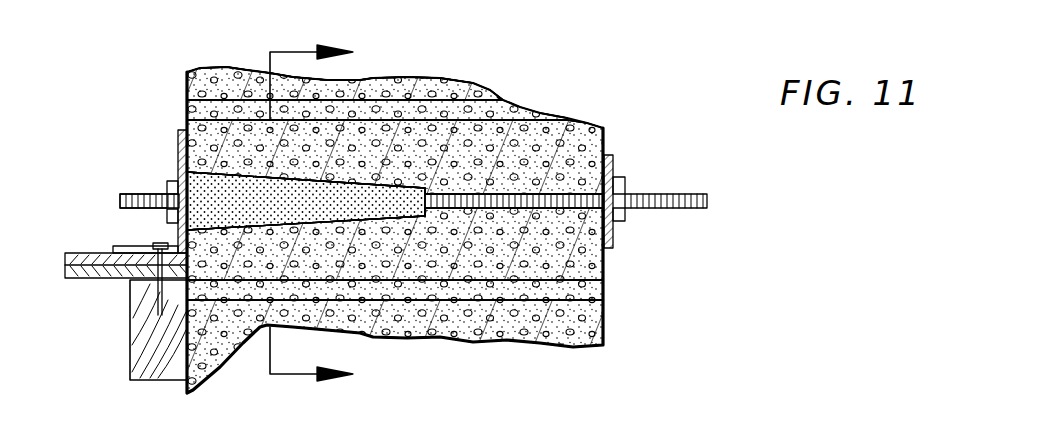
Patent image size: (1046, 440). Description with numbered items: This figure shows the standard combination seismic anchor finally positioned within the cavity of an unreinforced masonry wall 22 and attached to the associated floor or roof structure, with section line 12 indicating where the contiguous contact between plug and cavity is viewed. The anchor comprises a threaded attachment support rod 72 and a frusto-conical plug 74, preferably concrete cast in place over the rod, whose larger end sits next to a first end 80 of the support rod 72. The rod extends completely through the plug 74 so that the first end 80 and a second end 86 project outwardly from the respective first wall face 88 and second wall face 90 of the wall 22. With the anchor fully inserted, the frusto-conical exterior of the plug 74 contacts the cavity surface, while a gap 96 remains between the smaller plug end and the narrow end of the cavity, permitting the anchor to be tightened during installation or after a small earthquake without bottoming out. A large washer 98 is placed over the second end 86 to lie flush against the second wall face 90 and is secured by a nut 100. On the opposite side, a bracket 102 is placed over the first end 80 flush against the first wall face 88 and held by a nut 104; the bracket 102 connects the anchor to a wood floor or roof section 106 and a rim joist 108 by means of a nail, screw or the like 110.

The section line 12- 12 is at (311, 214).
The unreinforced masonry wall 22 is at (391, 209).
The threaded attachment support rod 72 is at (557, 186).
The frusto-conical plug 74 is at (347, 192).
The first end of the support rod 80 is at (118, 202).
The second end of the support rod 86 is at (707, 202).
The first wall face 88 is at (197, 87).
The second wall face 90 is at (605, 268).
The gap 96 is at (430, 212).
The large washer 98 is at (609, 156).
The nut 100 is at (623, 178).
The bracket 102 is at (183, 133).
The nut 104 is at (177, 173).
The wood floor or roof section 106 is at (102, 253).
The rim joist 108 is at (170, 383).
The nail, screw or the like 110 is at (150, 284).